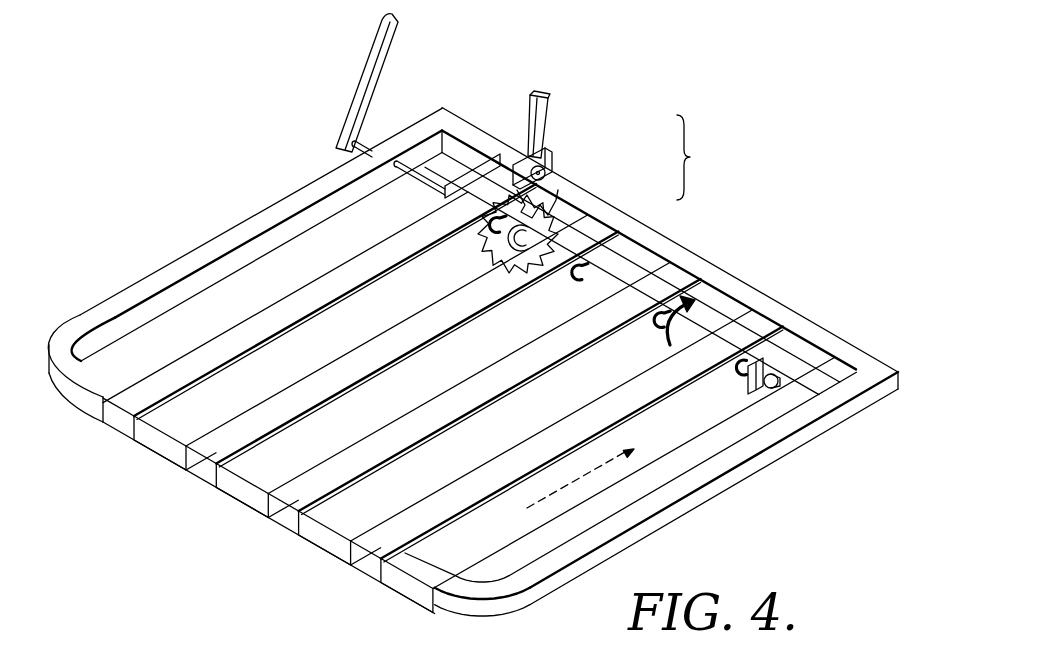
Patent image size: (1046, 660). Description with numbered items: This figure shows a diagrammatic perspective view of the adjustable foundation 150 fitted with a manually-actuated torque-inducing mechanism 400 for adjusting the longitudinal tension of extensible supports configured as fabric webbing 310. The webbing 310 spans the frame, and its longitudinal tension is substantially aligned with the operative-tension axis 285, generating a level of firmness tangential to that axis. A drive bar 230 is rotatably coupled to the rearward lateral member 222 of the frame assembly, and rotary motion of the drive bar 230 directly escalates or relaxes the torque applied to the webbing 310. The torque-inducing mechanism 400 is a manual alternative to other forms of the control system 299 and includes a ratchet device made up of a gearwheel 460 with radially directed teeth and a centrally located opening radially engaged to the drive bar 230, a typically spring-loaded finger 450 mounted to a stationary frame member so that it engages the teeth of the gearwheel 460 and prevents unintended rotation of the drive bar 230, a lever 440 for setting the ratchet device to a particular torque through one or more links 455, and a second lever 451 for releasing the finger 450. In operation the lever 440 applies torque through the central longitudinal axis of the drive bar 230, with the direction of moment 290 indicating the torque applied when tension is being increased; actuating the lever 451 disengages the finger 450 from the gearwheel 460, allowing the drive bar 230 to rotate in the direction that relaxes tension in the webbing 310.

The adjustable foundation 150 is at (229, 167).
The rearward lateral member 222 is at (462, 121).
The drive bar 230 is at (741, 378).
The operative-tension axis 285 is at (603, 466).
The direction of moment 290 is at (682, 300).
The control system 299 is at (703, 157).
The fabric webbing 310 is at (280, 510).
The torque-inducing mechanism 400 is at (529, 165).
The lever 440 is at (386, 53).
The finger 450 is at (550, 173).
The lever 451 is at (537, 92).
The links 455 is at (411, 170).
The gearwheel 460 is at (484, 258).